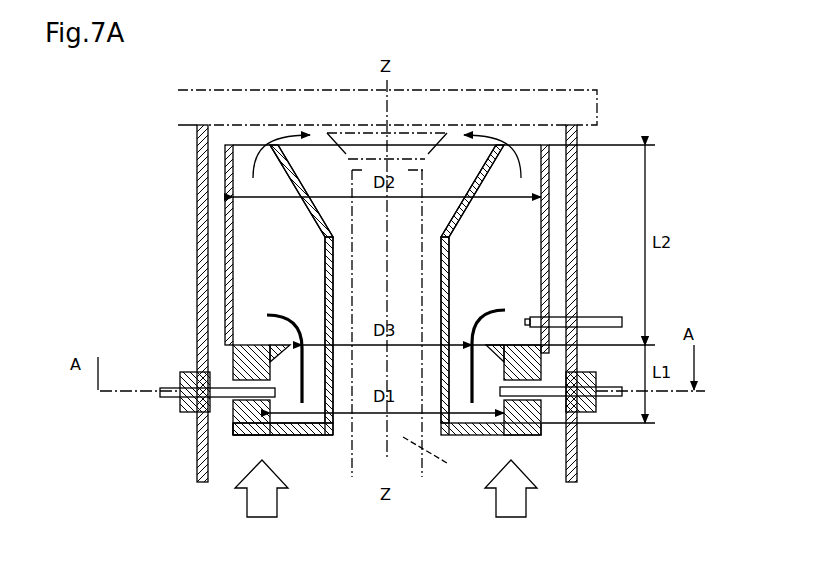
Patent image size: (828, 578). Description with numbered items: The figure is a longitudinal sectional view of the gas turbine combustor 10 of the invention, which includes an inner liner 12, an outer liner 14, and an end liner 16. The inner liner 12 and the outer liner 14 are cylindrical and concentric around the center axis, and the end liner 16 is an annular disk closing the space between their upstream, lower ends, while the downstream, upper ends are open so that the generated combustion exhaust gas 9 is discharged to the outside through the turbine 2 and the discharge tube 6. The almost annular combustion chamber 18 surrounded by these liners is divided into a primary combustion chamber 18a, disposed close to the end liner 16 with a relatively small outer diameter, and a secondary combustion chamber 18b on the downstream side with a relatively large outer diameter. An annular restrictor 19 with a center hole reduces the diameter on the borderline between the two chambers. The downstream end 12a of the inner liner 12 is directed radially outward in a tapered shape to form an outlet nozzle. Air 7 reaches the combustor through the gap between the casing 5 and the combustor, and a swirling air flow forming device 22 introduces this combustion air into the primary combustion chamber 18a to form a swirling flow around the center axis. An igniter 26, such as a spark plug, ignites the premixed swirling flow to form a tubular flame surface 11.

The turbine 2 is at (413, 142).
The casing 5 is at (575, 282).
The discharge tube 6 is at (432, 457).
The air 7 is at (262, 503).
The combustion exhaust gas 9 is at (522, 175).
The gas turbine combustor 10 is at (217, 202).
The tubular flame surface 11 is at (270, 312).
The inner liner 12 is at (325, 266).
The downstream end of the inner liner 12a is at (281, 150).
The outer liner 14 is at (228, 270).
The end liner 16 is at (303, 432).
The combustion chamber 18 is at (280, 237).
The primary combustion chamber 18a is at (462, 389).
The secondary combustion chamber 18b is at (510, 238).
The annular restrictor 19 is at (495, 345).
The swirling air flow forming device 22 is at (230, 362).
The igniter 26 is at (612, 320).